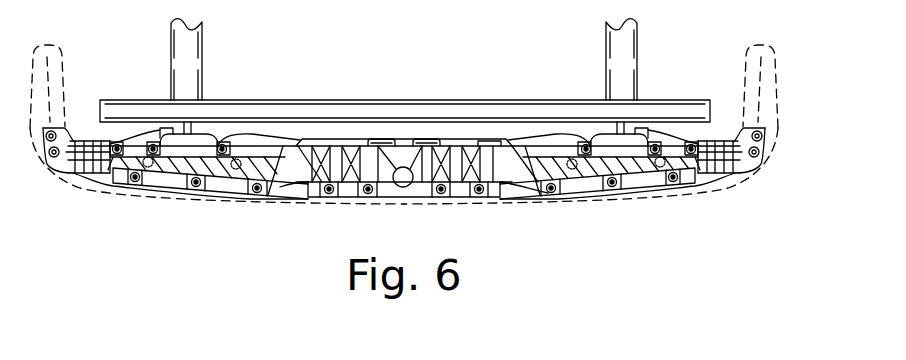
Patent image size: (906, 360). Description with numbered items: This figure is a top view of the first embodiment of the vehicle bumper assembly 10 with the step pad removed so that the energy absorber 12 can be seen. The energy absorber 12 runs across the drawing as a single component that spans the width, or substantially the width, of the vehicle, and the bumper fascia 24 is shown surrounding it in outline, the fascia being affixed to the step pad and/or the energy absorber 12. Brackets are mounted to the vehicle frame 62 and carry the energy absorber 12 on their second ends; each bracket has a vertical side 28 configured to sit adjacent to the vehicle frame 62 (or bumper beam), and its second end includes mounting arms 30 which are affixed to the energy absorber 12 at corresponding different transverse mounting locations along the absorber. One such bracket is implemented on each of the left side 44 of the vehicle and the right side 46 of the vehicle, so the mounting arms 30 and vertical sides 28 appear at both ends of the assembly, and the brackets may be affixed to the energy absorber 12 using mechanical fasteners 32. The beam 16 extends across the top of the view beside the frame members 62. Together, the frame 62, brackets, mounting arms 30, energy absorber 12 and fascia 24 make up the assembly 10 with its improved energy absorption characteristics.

The vehicle bumper assembly 10 is at (81, 260).
The energy absorber 12 is at (547, 148).
The cross member 16 is at (258, 150).
The bumper fascia 24 is at (776, 100).
The vertical side 28 is at (191, 133).
The mounting arms 30 is at (165, 177).
The fastener 32 is at (124, 144).
The left side 44 is at (182, 248).
The right side 46 is at (612, 248).
The vehicle frame 62 is at (173, 53).